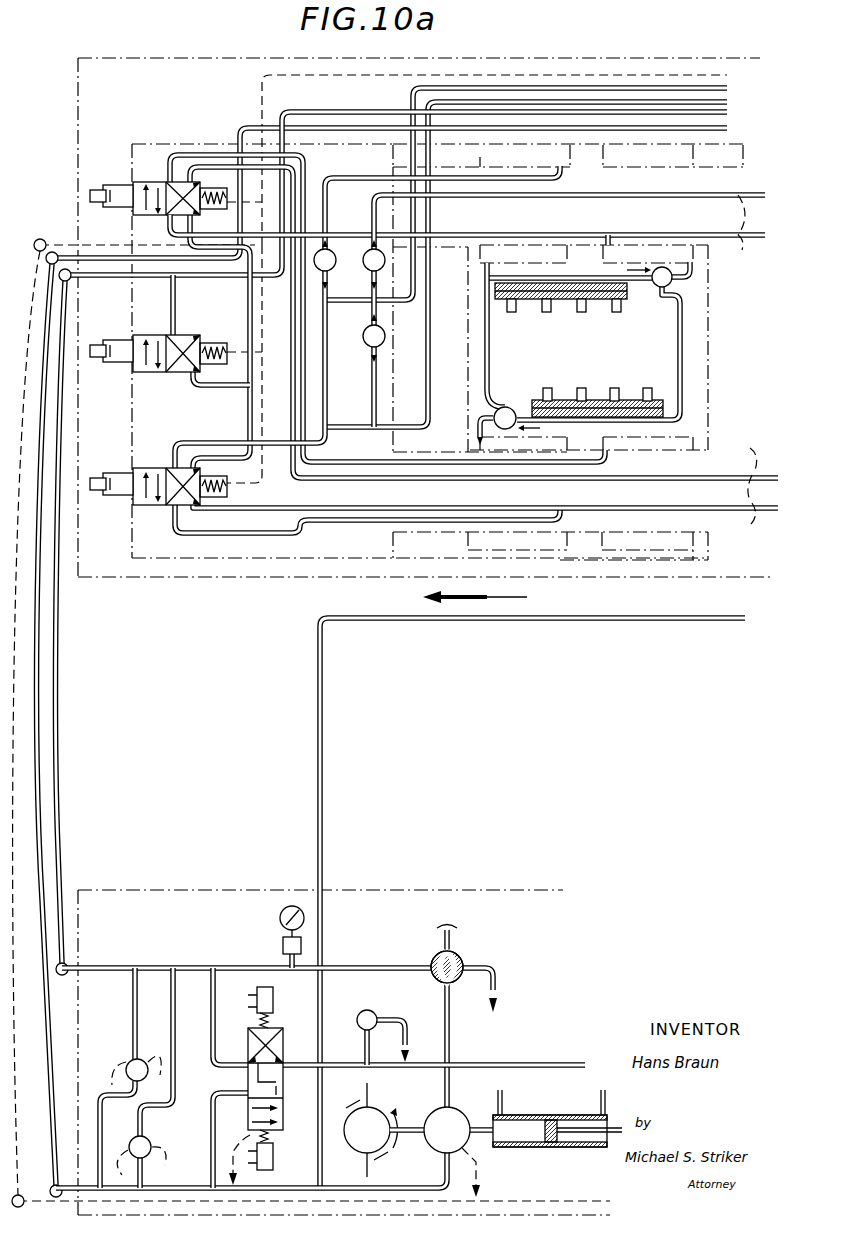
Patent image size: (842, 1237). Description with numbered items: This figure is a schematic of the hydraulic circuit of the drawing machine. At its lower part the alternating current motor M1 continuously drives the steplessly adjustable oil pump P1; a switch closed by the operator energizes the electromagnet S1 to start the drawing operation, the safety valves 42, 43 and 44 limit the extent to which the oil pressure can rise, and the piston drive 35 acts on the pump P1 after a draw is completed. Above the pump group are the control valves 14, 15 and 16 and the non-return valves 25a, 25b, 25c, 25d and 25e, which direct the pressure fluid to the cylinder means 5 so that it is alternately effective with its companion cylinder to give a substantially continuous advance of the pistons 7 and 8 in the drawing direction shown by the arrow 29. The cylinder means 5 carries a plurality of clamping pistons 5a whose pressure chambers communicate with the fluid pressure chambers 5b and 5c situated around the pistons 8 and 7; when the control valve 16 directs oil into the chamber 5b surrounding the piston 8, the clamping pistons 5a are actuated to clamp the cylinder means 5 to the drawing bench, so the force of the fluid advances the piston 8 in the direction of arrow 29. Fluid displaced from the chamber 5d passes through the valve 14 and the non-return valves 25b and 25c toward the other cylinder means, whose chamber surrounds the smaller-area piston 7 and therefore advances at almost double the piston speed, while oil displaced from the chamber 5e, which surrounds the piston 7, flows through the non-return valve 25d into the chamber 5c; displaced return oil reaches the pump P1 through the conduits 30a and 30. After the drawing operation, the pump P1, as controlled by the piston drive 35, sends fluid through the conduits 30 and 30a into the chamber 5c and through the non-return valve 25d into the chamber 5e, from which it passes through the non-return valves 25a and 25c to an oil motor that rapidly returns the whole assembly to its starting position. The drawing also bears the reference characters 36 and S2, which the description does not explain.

The cylinder means 5 is at (708, 335).
The clamping pistons 5a is at (532, 313).
The fluid pressure chamber 5b is at (703, 548).
The fluid pressure chamber 5c is at (706, 154).
The pressure chamber 5d is at (468, 545).
The pressure chamber 5e is at (470, 156).
The piston 7 is at (734, 237).
The piston 8 is at (745, 474).
The control valve 14 is at (160, 508).
The control valve 15 is at (180, 372).
The control valve 16 is at (158, 181).
The non-return valve 25a is at (336, 249).
The non-return valve 25b is at (362, 336).
The non-return valve 25c is at (386, 262).
The non-return valve 25d is at (660, 290).
The non-return valve 25e is at (507, 405).
The arrow 29 is at (535, 599).
The conduit 30 is at (62, 765).
The conduit 30a is at (690, 230).
The piston drive 35 is at (552, 1148).
The line bundle 36 is at (637, 92).
The safety valve 42 is at (132, 1140).
The safety valve 43 is at (127, 1067).
The safety valve 44 is at (377, 1018).
The electromagnet S1 is at (268, 1157).
The solenoid S2 is at (277, 1007).
The alternating current motor M1 is at (371, 1130).
The oil pump P1 is at (441, 1152).